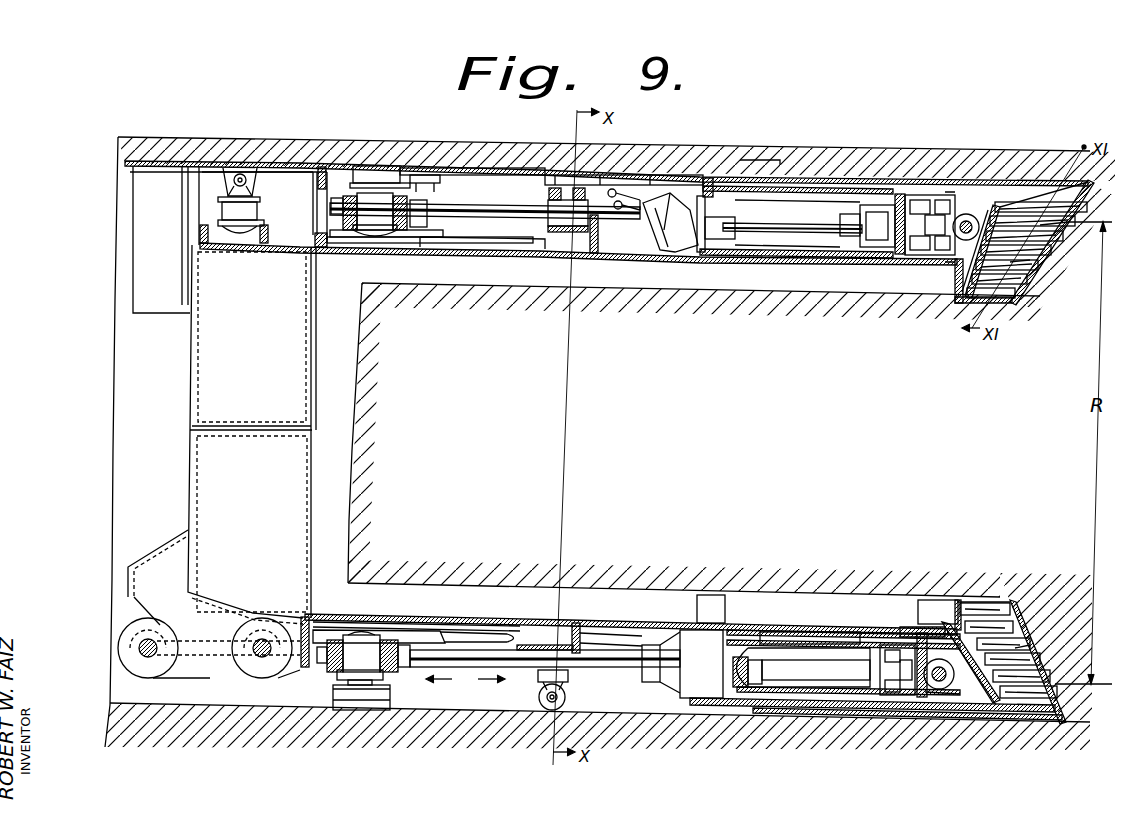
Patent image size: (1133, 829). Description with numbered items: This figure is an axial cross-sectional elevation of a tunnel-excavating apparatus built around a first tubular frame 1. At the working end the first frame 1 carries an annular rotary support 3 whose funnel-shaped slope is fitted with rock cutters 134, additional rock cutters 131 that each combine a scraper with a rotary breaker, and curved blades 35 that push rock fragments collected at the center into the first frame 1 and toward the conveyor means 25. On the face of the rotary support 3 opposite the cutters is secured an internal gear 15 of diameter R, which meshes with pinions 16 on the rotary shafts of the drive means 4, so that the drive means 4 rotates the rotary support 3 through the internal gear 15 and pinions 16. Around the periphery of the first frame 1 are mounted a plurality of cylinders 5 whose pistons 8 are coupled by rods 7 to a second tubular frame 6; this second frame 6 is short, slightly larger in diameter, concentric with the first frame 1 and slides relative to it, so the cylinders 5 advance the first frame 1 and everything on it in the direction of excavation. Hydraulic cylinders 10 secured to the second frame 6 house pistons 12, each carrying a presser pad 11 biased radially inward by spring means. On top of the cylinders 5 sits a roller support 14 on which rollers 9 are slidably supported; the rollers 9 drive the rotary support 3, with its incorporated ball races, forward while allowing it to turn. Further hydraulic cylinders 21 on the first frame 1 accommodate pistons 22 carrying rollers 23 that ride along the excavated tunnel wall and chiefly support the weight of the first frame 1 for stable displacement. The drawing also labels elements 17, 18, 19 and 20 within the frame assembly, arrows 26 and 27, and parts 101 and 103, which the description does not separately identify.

The first tubular frame 1 is at (528, 256).
The annular rotary support 3 is at (1013, 190).
The drive means 4 is at (675, 232).
The cylinders 5 is at (813, 694).
The second tubular frame 6 is at (421, 178).
The rods 7 is at (483, 208).
The pistons 8 is at (758, 682).
The rollers 9 is at (935, 192).
The hydraulic cylinders 10 is at (393, 215).
The presser pad 11 is at (377, 172).
The pistons 12 is at (374, 226).
The roller support 14 is at (900, 200).
The internal gear 15 is at (970, 190).
The pinions 16 is at (958, 275).
The coupling block 17 is at (873, 240).
The sleeve 18 is at (857, 712).
The louver slats 19 is at (1047, 205).
The guide frame 20 is at (538, 168).
The hydraulic cylinders 21 is at (239, 228).
The pistons 22 is at (260, 178).
The rollers 23 is at (229, 172).
The conveyor means 25 is at (203, 638).
The direction arrow (forward) 26 is at (491, 689).
The direction arrow (backward) 27 is at (438, 689).
The blades 35 is at (936, 610).
The vertical column 101 is at (357, 484).
The casing section 103 is at (753, 164).
The rock cutters 131 is at (1025, 222).
The rock cutters 134 is at (995, 244).